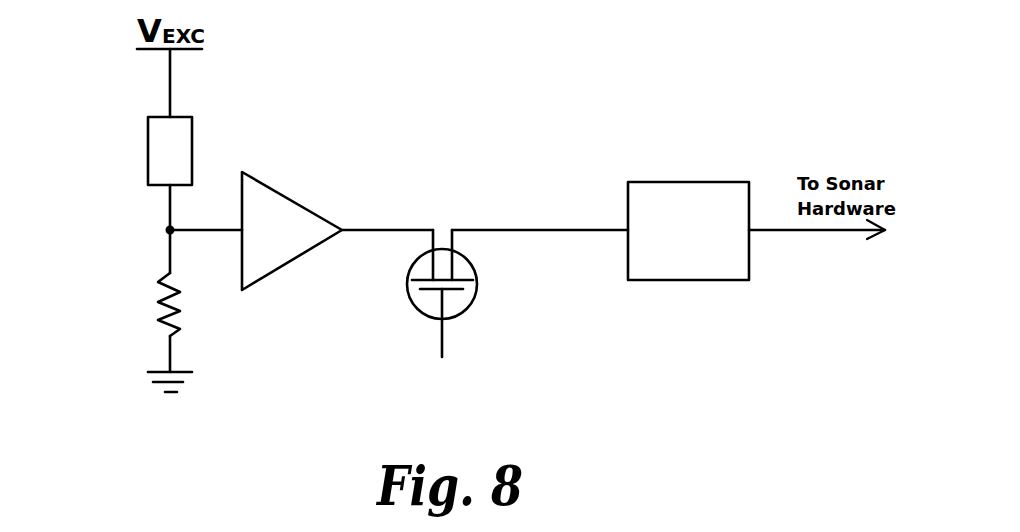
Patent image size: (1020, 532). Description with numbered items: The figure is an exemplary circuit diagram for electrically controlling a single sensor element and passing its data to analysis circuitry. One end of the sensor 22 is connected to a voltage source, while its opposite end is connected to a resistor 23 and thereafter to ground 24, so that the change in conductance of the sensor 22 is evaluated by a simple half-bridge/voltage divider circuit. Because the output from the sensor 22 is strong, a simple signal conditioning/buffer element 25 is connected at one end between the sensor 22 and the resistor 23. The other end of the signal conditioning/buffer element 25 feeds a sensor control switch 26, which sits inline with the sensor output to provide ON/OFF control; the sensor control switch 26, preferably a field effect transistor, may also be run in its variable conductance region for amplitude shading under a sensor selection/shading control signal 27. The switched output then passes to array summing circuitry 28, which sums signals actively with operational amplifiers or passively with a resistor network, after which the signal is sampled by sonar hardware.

The sensor 22 is at (148, 153).
The resistor 23 is at (158, 322).
The ground 24 is at (153, 382).
The signal conditioning/buffer element 25 is at (292, 198).
The sensor control switch 26 is at (480, 285).
The sensor selection/shading control signal 27 is at (445, 341).
The array summing circuitry 28 is at (688, 231).